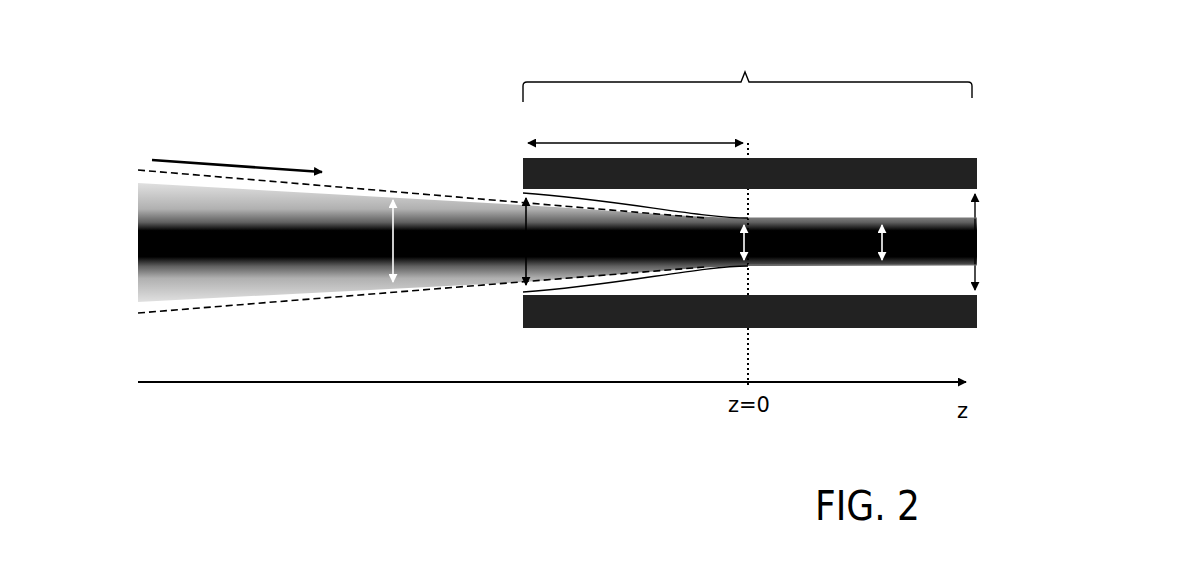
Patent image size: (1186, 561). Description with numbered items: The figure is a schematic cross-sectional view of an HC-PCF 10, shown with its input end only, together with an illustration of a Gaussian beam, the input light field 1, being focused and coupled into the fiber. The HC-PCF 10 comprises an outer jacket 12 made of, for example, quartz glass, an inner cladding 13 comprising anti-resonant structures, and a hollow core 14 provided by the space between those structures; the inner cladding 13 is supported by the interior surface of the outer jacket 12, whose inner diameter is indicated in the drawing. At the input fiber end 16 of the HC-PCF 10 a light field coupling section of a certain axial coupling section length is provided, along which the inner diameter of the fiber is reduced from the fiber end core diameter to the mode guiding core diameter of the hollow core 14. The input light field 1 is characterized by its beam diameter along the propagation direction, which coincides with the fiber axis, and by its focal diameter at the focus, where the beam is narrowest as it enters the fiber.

The input light field 1 is at (478, 208).
The HC-PCF 10 is at (749, 208).
The outer jacket 12 is at (930, 162).
The inner cladding 13 is at (963, 213).
The hollow core 14 is at (975, 240).
The input fiber end 16 is at (554, 356).